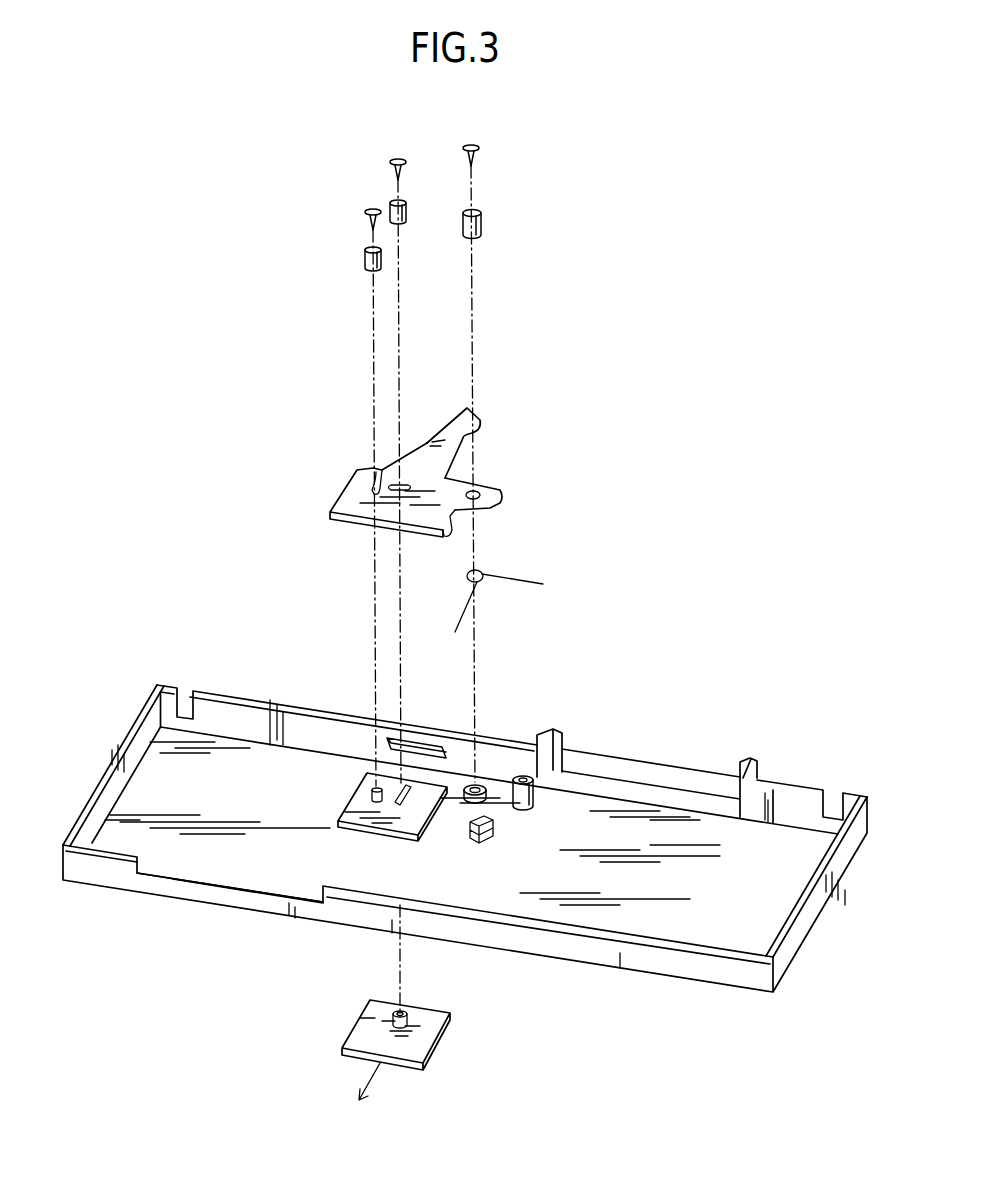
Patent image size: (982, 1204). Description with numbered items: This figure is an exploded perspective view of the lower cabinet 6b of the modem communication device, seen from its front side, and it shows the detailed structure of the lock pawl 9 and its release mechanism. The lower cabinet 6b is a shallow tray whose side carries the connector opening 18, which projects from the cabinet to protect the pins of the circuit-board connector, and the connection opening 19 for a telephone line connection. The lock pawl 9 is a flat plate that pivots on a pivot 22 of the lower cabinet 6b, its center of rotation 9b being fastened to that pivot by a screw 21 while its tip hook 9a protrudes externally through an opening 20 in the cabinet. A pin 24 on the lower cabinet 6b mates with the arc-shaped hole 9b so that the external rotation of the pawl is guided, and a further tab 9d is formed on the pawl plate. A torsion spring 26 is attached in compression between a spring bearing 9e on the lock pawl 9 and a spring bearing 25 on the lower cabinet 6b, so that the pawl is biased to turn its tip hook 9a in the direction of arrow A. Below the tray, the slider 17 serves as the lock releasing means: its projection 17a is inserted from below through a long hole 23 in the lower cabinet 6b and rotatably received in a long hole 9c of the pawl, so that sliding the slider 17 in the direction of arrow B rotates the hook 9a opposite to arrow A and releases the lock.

The lower cabinet 6b is at (832, 906).
The connector opening 18 is at (663, 770).
The connection opening 19 is at (178, 876).
The opening 20 is at (432, 740).
The screw 21 is at (479, 147).
The pivot 22 is at (493, 782).
The long hole 23 is at (408, 796).
The pin 24 is at (371, 789).
The spring bearing 25 is at (494, 827).
The torsion spring 26 is at (520, 574).
The lock pawl 9 is at (490, 458).
The tip hook 9a is at (483, 423).
The center of rotation 9b is at (493, 488).
The long hole 9c is at (400, 483).
The bracket tab 9d is at (374, 470).
The spring bearing 9e is at (448, 540).
The slider 17 is at (443, 1041).
The projection 17a is at (406, 1007).